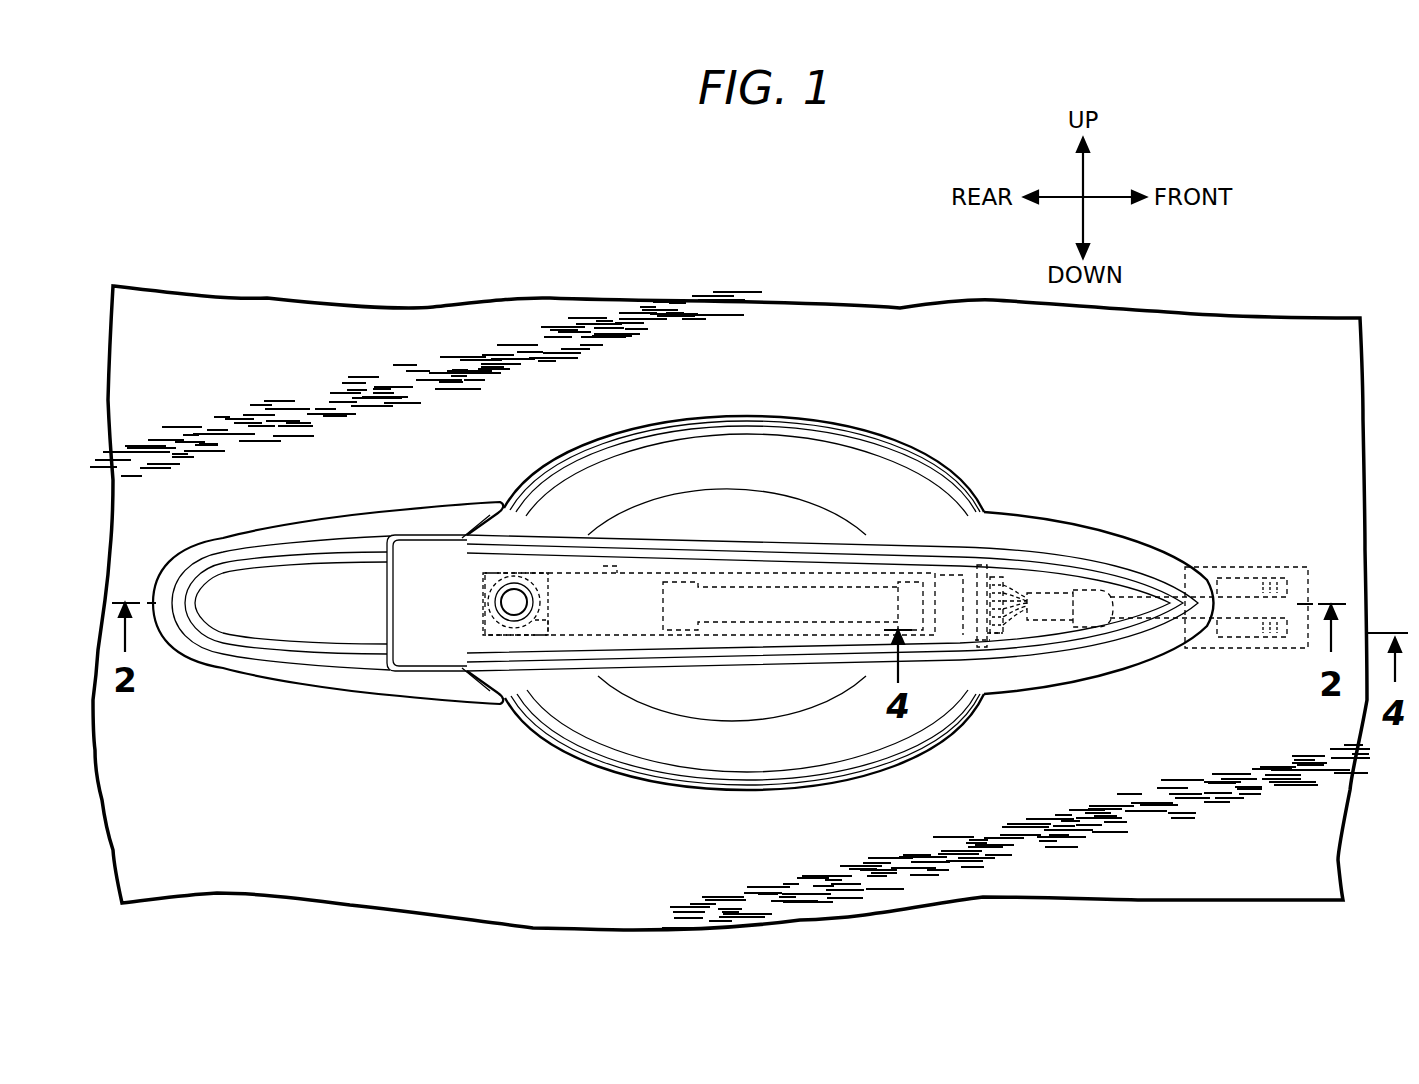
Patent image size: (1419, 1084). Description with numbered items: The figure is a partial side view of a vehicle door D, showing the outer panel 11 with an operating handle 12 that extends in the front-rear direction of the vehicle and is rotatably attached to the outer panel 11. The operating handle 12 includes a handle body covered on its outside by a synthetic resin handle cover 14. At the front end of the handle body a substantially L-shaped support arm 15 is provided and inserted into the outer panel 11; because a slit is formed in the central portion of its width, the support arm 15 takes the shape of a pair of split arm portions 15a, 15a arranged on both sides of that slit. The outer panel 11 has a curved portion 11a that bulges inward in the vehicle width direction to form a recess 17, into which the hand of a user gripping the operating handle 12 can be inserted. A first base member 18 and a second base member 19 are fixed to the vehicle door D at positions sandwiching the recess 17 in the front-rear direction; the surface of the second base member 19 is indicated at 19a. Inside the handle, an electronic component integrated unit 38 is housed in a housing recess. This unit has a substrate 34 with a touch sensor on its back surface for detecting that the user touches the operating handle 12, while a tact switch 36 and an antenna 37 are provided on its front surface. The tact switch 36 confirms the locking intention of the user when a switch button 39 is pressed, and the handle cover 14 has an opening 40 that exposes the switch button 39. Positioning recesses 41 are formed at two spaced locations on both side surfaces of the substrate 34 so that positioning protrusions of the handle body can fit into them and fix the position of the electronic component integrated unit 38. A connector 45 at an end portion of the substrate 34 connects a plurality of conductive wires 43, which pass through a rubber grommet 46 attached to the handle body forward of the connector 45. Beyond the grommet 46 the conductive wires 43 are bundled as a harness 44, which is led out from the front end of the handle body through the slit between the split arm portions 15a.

The outer panel 11 is at (825, 327).
The curved portion 11a is at (610, 470).
The operating handle 12 is at (805, 544).
The handle cover 14 is at (742, 546).
The support arm 15 is at (1209, 586).
The split arm portions 15a is at (1234, 580).
The recess 17 is at (732, 759).
The first base member 18 is at (1197, 569).
The second base member 19 is at (328, 620).
The grip surface 19a is at (263, 582).
The substrate 34 is at (792, 668).
The tact switch 36 is at (547, 622).
The antenna 37 is at (834, 618).
The electronic component integrated unit 38 is at (735, 539).
The switch button 39 is at (520, 602).
The opening 40 is at (513, 662).
The positioning recesses 41 is at (610, 565).
The conductive wires 43 is at (998, 577).
The harness 44 is at (1055, 600).
The connector 45 is at (968, 645).
The grommet 46 is at (990, 638).
The vehicle door D is at (1153, 397).